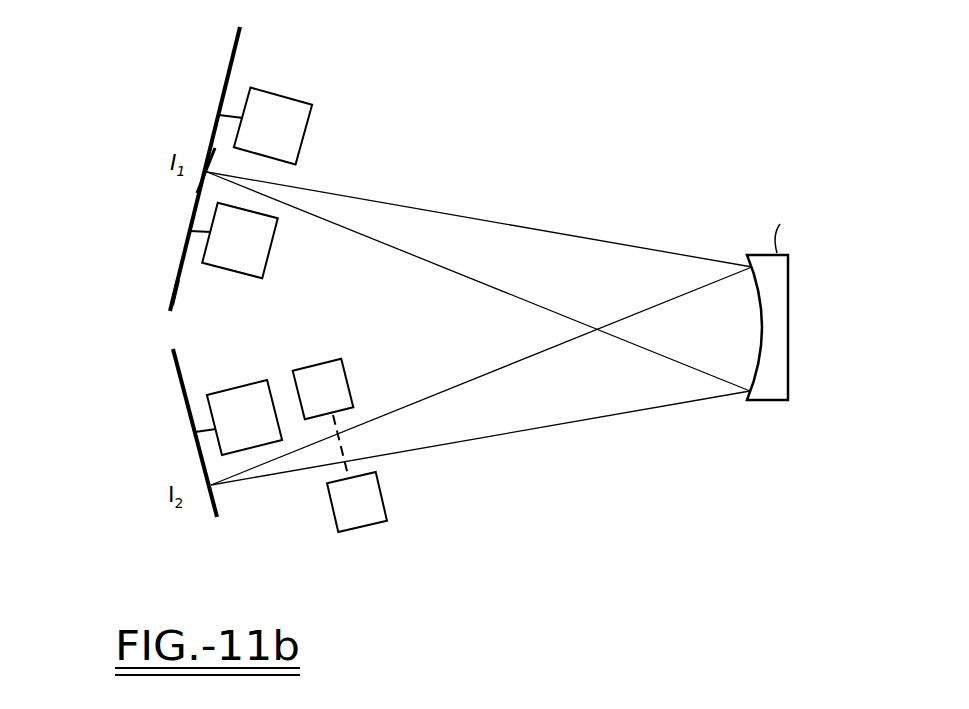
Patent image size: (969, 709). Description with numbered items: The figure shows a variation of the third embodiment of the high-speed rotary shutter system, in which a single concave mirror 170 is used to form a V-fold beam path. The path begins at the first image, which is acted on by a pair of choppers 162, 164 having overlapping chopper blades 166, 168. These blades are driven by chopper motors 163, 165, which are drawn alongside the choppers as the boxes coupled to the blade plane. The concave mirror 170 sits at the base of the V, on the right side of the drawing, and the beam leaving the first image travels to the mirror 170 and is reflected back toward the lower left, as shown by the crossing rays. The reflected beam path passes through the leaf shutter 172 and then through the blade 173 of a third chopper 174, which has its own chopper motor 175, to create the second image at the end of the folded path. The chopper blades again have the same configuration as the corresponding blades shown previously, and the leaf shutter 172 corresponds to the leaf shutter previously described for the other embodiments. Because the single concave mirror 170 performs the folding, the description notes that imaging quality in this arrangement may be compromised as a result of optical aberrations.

The chopper blade 168 is at (233, 50).
The chopper blade 166 is at (175, 293).
The chopper 164 is at (216, 108).
The chopper motor 165 is at (297, 100).
The chopper 162 is at (188, 231).
The chopper motor 163 is at (257, 280).
The blade 173 is at (176, 369).
The third chopper 174 is at (188, 435).
The chopper motor 175 is at (240, 387).
The leaf shutter 172 is at (343, 360).
The concave mirror 170 is at (783, 400).